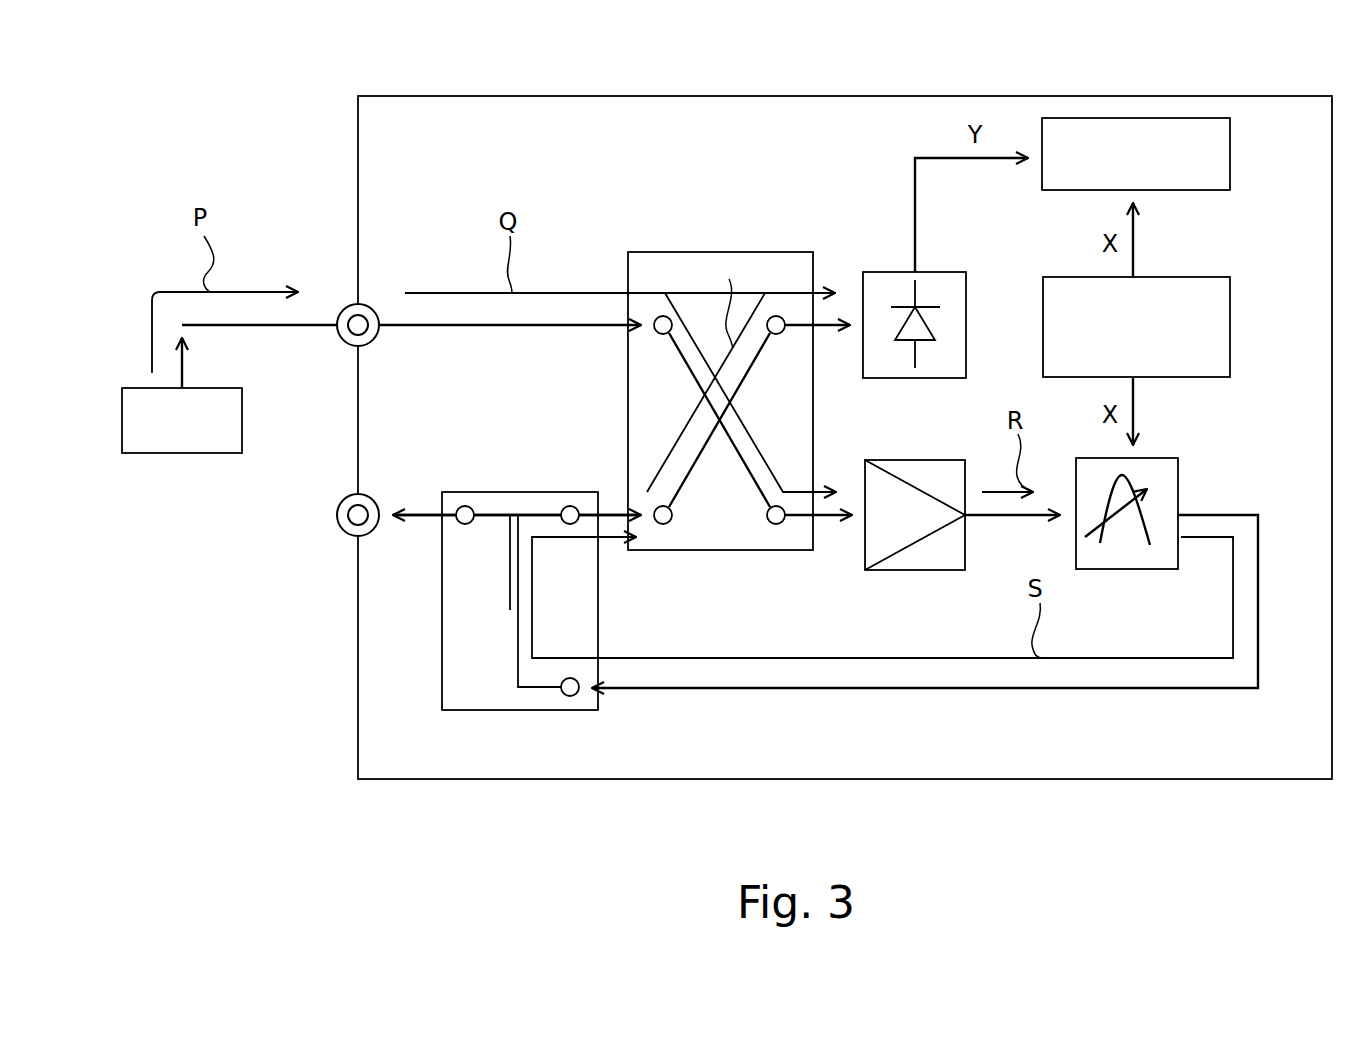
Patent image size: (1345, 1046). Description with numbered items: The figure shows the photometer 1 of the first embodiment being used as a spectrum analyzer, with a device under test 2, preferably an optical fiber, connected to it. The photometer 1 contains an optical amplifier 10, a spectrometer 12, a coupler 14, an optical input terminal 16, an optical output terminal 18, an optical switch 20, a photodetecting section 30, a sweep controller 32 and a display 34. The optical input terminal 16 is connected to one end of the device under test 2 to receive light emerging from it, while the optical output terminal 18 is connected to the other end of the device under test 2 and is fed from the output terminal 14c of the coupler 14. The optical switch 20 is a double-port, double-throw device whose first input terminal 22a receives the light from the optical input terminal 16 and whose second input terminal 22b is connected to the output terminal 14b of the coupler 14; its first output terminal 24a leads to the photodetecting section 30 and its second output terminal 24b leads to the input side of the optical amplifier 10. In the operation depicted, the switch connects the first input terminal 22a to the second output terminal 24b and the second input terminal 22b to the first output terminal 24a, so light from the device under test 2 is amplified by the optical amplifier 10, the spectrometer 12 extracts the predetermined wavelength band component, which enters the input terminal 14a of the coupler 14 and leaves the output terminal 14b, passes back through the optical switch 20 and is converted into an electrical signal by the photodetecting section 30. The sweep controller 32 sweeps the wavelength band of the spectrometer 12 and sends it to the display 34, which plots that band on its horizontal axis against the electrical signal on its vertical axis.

The photometer 1 is at (872, 96).
The device under test (DUT) 2 is at (243, 420).
The optical amplifier 10 is at (957, 460).
The spectrometer 12 is at (1165, 458).
The coupler 14 is at (546, 554).
The input terminal 14a is at (576, 678).
The output terminal 14b is at (571, 506).
The output terminal 14c is at (465, 506).
The optical input terminal 16 is at (373, 304).
The optical output terminal 18 is at (372, 500).
The optical switch 20 is at (721, 401).
The first input terminal 22a is at (661, 316).
The second input terminal 22b is at (665, 524).
The first output terminal 24a is at (778, 316).
The second output terminal 24b is at (779, 524).
The photodetecting section 30 is at (948, 272).
The sweep controller 32 is at (1232, 323).
The display 34 is at (1232, 152).